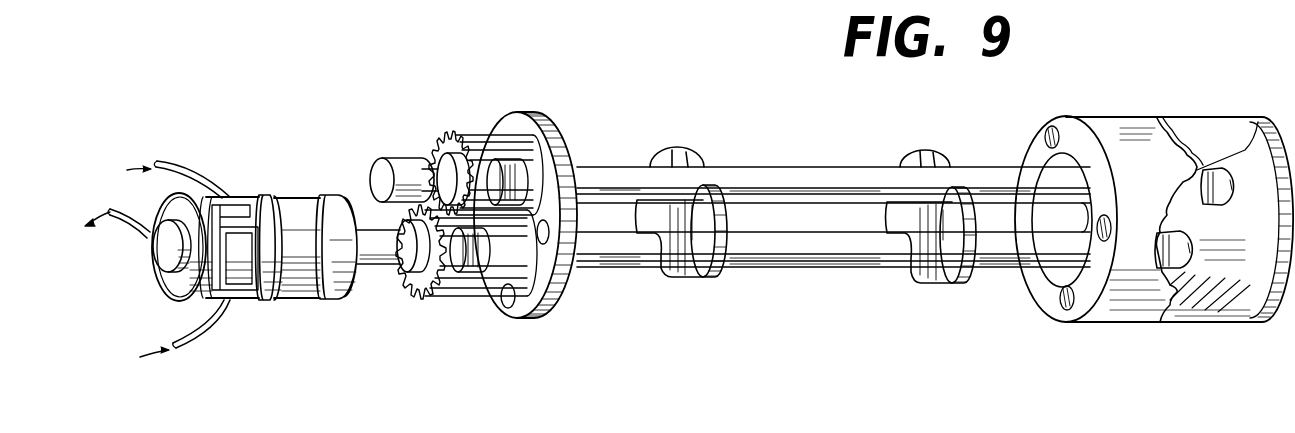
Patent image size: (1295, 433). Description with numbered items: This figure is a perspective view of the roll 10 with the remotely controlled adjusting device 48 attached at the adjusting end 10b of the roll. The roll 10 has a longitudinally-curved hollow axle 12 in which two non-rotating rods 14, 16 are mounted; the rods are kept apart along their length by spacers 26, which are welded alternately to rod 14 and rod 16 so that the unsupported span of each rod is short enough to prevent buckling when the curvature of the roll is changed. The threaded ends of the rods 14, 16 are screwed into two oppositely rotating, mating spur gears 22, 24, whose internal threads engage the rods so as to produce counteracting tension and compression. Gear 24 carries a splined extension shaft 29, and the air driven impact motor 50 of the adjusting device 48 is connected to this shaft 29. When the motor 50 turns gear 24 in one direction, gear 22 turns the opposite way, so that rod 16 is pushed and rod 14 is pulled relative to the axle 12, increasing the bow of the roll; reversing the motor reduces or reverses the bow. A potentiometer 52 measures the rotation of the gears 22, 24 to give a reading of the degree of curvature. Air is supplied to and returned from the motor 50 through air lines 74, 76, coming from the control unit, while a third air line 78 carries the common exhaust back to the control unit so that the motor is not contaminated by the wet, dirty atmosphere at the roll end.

The roll 10 is at (693, 112).
The adjusting end of the roll 10b is at (292, 172).
The longitudinally-curved hollow axle 12 is at (1122, 295).
The rod 14 is at (810, 172).
The rod 16 is at (832, 260).
The spur gear 22 is at (458, 134).
The spur gear 24 is at (447, 300).
The spacers 26 is at (668, 276).
The splined extension shaft 29 is at (385, 265).
The remotely controlled adjusting device 48 is at (270, 327).
The air driven impact motor 50 is at (305, 290).
The potentiometer 52 is at (378, 158).
The air line 74 is at (185, 170).
The air line 76 is at (200, 343).
The air line 78 is at (137, 232).